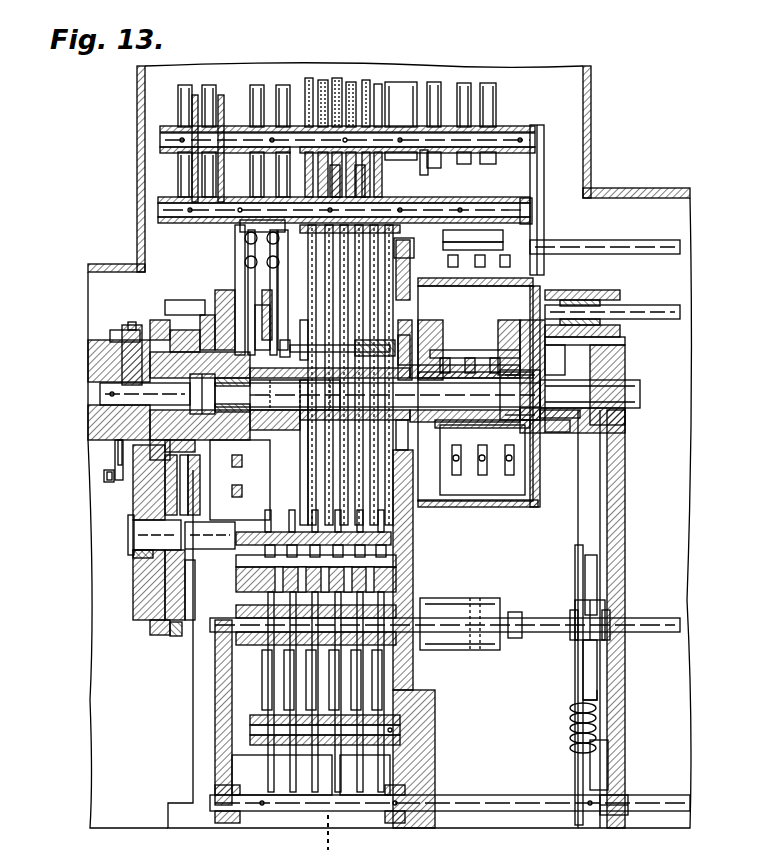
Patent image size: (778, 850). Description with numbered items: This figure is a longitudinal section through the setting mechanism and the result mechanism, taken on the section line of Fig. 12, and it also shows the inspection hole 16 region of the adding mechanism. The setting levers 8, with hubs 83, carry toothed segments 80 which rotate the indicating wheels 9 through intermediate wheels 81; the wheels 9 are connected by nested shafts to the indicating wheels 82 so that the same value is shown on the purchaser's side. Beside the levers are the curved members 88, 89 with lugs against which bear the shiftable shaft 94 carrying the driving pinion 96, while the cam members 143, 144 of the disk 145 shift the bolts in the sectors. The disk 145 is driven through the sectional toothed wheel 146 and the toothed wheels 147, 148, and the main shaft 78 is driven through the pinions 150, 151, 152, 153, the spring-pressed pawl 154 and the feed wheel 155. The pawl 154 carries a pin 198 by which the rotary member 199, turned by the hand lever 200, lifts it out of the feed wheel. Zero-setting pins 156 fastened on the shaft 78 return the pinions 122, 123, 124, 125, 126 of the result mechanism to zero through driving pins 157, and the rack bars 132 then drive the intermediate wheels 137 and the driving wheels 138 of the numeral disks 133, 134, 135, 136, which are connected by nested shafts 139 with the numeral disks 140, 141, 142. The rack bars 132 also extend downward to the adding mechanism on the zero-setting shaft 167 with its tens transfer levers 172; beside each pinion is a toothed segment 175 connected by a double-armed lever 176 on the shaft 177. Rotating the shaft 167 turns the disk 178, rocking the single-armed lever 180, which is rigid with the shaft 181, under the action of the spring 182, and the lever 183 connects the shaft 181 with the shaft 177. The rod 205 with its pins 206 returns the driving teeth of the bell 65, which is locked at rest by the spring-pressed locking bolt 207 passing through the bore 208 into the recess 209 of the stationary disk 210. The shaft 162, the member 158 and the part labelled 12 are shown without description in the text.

The indicating wheels 9 is at (208, 85).
The indicating wheels 82 is at (258, 85).
The intermediate wheels 81 is at (198, 190).
The Fig. 12 section line 12 is at (268, 72).
The inspection hole 16 is at (325, 75).
The driving wheels 138 is at (320, 117).
The numeral disk 133 is at (323, 80).
The numeral disk 134 is at (338, 78).
The numeral disk 135 is at (366, 82).
The numeral disk 136 is at (410, 82).
The numeral disk 140 is at (434, 82).
The numeral disk 141 is at (464, 83).
The numeral disk 142 is at (488, 83).
The intermediate wheels 137 is at (340, 175).
The nested shafts 139 is at (424, 150).
The rod 205 is at (580, 252).
The bore 208 is at (545, 292).
The recess 209 is at (545, 312).
The locking bolt 207 is at (550, 333).
The shaft 162 is at (620, 398).
The pins 206 is at (488, 276).
The stationary disk 210 is at (500, 336).
The box 158 is at (558, 432).
The bell 65 is at (526, 502).
The rack bars 132 is at (328, 290).
The shaft 94 is at (296, 345).
The driving pinion 96 is at (386, 345).
The pinion 126 is at (305, 436).
The pinion 125 is at (333, 440).
The pinion 124 is at (348, 440).
The pinion 123 is at (364, 440).
The pinion 122 is at (400, 425).
The feed wheel 155 is at (190, 386).
The main shaft 78 is at (110, 402).
The zero-setting pins 156 is at (290, 396).
The driving pins 157 is at (500, 400).
The pin 198 is at (110, 340).
The spring-pressed pawl 154 is at (130, 325).
The rotary member 199 is at (118, 445).
The pinion 153 is at (125, 453).
The hand lever 200 is at (108, 482).
The toothed wheel 147 is at (135, 500).
The hubs 83 is at (190, 450).
The sectional toothed wheel 146 is at (190, 465).
The disk 145 is at (190, 480).
The cam member 144 is at (192, 494).
The curved member 89 is at (240, 480).
The pinion 151 is at (152, 560).
The pinion 152 is at (140, 590).
The pinion 150 is at (158, 628).
The toothed wheel 148 is at (170, 636).
The setting levers 8 is at (245, 256).
The toothed segments 80 is at (245, 268).
The cam member 143 is at (215, 299).
The curved member 88 is at (262, 292).
The toothed segment 175 is at (340, 528).
The tens transfer levers 172 is at (378, 578).
The shaft 167 is at (545, 622).
The double-armed lever 176 is at (320, 693).
The shaft 177 is at (405, 728).
The lever 183 is at (390, 775).
The shaft 181 is at (522, 805).
The disk 178 is at (586, 568).
The single-armed lever 180 is at (580, 667).
The spring 182 is at (570, 730).